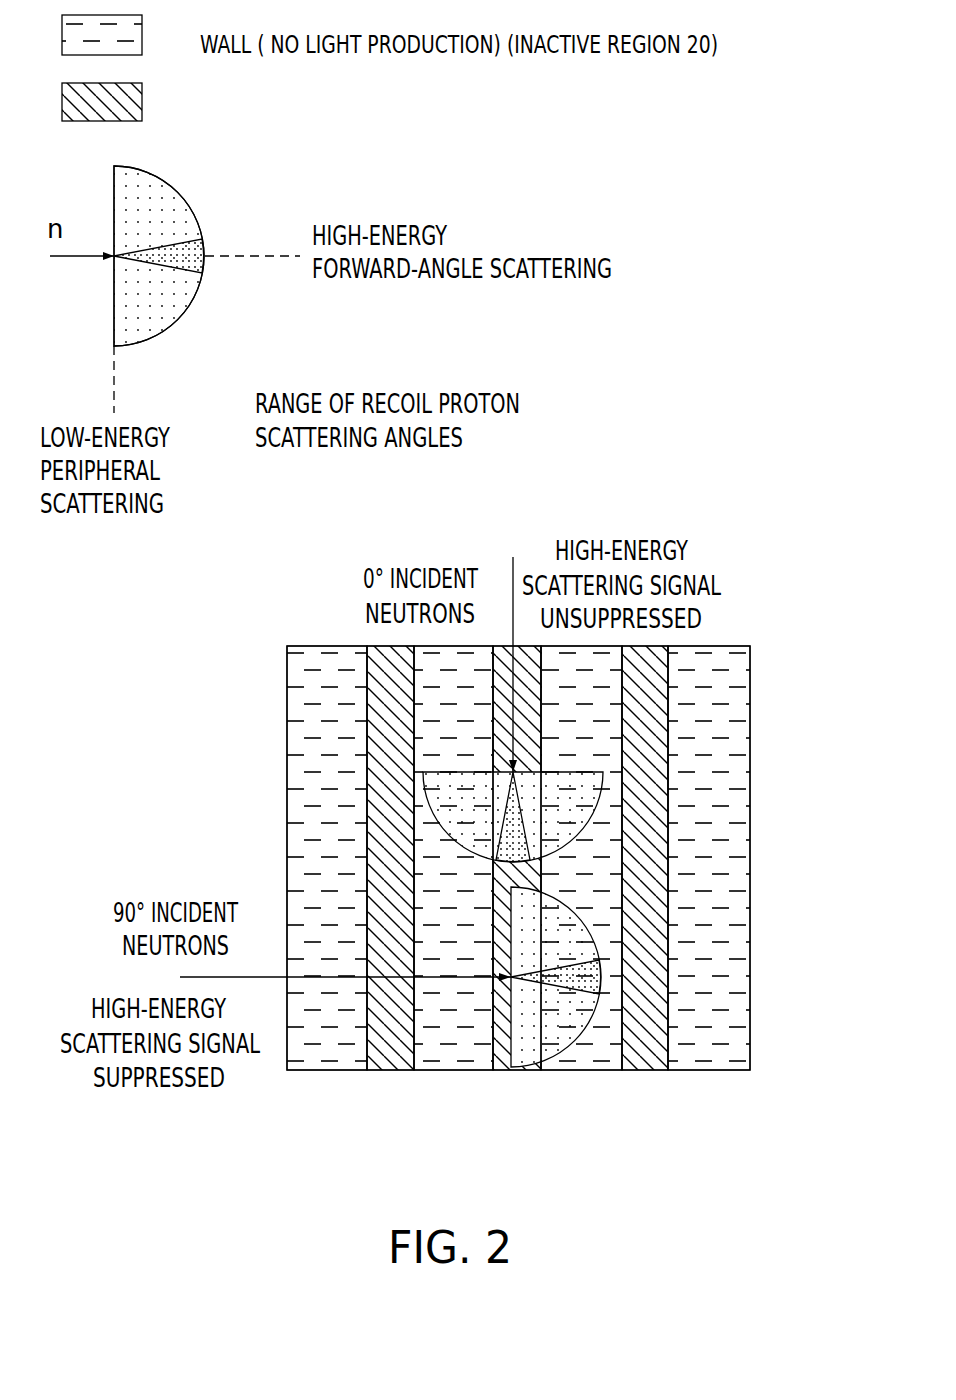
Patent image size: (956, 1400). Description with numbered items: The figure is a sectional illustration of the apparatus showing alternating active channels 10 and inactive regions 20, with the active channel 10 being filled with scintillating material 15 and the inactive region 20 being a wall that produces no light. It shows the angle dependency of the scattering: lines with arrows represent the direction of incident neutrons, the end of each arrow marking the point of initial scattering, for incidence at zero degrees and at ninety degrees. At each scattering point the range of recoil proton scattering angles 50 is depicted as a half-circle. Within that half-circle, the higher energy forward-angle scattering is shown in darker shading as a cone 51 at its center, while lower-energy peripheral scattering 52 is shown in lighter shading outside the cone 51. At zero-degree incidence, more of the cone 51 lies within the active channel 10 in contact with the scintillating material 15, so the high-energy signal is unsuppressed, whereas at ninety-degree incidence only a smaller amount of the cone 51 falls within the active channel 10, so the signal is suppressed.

The active channel 10 is at (393, 1062).
The scintillating material 15 is at (347, 102).
The inactive region 20 is at (468, 1062).
The range of recoil proton scattering angles 50 is at (201, 310).
The cone 51 is at (190, 254).
The lower-energy peripheral scattering 52 is at (122, 192).